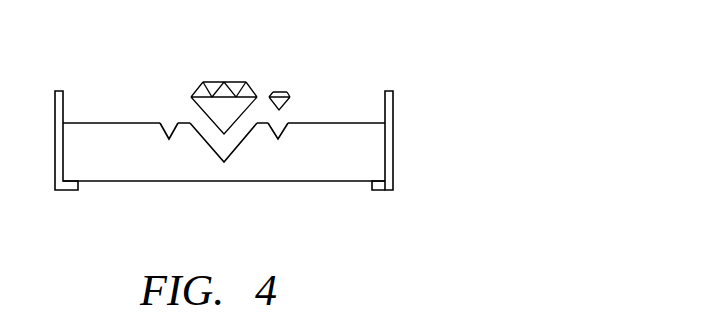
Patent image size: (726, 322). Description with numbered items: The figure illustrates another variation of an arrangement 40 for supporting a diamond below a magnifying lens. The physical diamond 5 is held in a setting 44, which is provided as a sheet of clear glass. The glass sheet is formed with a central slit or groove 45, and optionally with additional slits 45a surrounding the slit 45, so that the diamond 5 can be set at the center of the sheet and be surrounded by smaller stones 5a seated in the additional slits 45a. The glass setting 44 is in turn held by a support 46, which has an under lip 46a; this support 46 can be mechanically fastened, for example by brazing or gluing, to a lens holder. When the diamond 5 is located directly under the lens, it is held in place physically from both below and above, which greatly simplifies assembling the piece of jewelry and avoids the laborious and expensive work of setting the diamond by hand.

The tray assembly 40 is at (456, 94).
The setting 44 is at (118, 165).
The support 46 is at (389, 155).
The under lip 46a is at (378, 190).
The slits/grooves 45 is at (227, 147).
The additional slits 45a is at (167, 124).
The physical diamond 5 is at (212, 109).
The smaller stones 5a is at (278, 86).